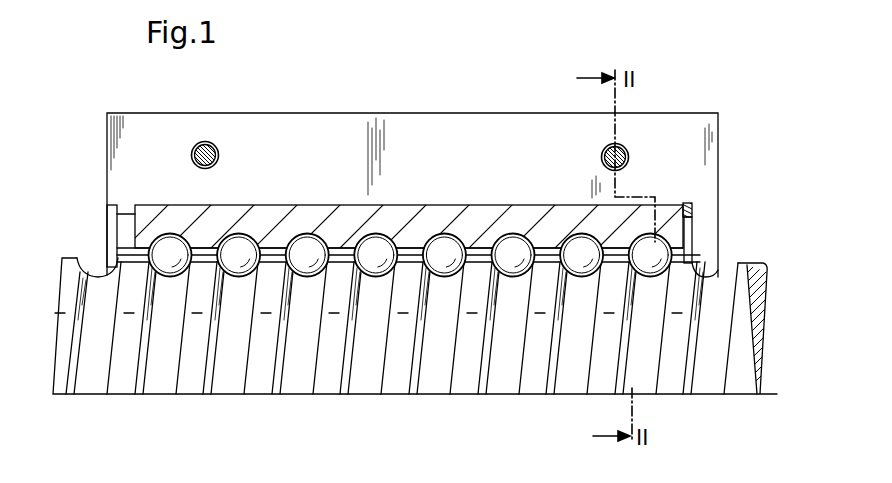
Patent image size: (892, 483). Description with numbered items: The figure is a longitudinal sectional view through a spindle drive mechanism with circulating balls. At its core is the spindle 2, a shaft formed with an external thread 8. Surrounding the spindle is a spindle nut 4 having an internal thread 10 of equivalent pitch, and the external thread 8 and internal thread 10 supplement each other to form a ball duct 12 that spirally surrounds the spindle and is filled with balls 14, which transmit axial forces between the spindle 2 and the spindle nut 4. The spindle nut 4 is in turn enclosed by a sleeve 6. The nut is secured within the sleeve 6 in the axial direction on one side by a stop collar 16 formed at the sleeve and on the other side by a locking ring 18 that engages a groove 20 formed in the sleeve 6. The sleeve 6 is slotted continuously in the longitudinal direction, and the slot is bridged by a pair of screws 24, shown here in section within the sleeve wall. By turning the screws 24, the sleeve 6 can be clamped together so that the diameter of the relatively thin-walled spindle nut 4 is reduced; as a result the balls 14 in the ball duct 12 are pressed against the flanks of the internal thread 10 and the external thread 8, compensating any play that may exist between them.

The spindle 2 is at (463, 380).
The spindle nut 4 is at (410, 215).
The sleeve 6 is at (718, 150).
The external thread 8 is at (95, 274).
The internal thread 10 is at (170, 232).
The guide surface 12 is at (193, 242).
The balls 14 is at (313, 233).
The stop collar 16 is at (122, 223).
The locking ring 18 is at (693, 219).
The groove 20 is at (690, 204).
The screws 24 is at (205, 142).